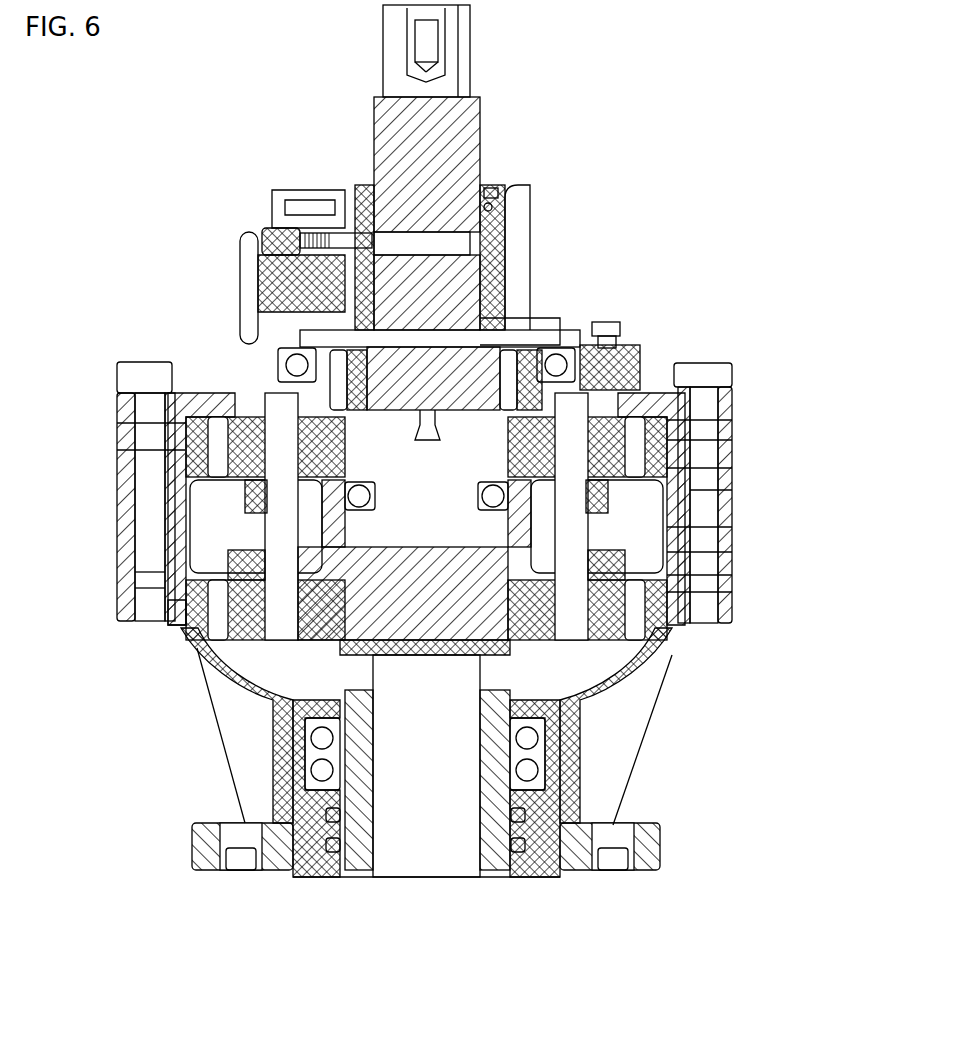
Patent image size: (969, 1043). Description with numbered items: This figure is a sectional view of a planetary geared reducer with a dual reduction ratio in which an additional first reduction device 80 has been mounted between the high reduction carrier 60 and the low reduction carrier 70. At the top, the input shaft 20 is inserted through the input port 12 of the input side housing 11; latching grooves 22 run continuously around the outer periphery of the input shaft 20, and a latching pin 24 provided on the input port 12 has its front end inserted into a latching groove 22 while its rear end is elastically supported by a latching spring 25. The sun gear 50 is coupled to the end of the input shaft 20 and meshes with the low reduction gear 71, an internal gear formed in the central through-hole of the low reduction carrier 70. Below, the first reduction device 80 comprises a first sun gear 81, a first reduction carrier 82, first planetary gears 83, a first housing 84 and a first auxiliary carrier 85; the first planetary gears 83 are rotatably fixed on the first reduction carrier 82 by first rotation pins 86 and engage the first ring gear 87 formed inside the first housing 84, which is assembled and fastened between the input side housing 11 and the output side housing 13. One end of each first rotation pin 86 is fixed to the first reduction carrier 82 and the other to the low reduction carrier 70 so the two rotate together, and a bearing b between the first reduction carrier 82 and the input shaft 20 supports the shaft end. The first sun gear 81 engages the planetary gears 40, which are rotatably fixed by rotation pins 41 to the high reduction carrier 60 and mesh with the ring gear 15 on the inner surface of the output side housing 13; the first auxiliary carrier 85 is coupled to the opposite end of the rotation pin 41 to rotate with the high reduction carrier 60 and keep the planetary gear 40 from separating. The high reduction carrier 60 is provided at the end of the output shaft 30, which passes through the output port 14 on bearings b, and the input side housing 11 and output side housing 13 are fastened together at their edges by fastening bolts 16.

The input shaft 20 is at (382, 96).
The latching grooves 22 is at (405, 245).
The input port 12 is at (508, 186).
The latching pin 24 is at (345, 226).
The latching spring 25 is at (276, 240).
The input side housing 11 is at (207, 392).
The fastening bolts 16 is at (148, 372).
The first ring gear 87 is at (735, 398).
The first reduction device 80 is at (472, 496).
The first planetary gear 83 is at (700, 440).
The first rotation pin 86 is at (690, 470).
The first housing 84 is at (732, 492).
The first reduction carrier 82 is at (660, 532).
The first auxiliary carrier 85 is at (640, 553).
The first sun gear 81 is at (751, 585).
The sun gear 50 is at (437, 356).
The low reduction gear 71 is at (288, 352).
The bearing b is at (282, 352).
The low reduction carrier 70 is at (598, 332).
The planetary gear 40 is at (200, 632).
The rotation pin 41 is at (280, 655).
The output side housing 13 is at (215, 655).
The output port 14 is at (300, 780).
The ring gear 15 is at (200, 610).
The high reduction carrier 60 is at (590, 692).
The output shaft 30 is at (360, 843).